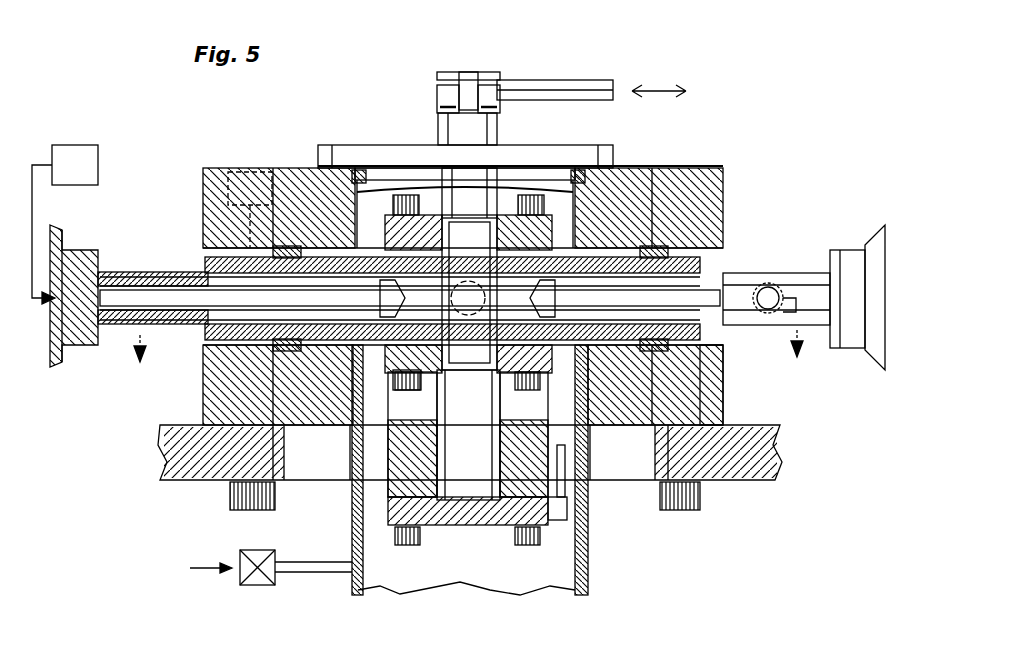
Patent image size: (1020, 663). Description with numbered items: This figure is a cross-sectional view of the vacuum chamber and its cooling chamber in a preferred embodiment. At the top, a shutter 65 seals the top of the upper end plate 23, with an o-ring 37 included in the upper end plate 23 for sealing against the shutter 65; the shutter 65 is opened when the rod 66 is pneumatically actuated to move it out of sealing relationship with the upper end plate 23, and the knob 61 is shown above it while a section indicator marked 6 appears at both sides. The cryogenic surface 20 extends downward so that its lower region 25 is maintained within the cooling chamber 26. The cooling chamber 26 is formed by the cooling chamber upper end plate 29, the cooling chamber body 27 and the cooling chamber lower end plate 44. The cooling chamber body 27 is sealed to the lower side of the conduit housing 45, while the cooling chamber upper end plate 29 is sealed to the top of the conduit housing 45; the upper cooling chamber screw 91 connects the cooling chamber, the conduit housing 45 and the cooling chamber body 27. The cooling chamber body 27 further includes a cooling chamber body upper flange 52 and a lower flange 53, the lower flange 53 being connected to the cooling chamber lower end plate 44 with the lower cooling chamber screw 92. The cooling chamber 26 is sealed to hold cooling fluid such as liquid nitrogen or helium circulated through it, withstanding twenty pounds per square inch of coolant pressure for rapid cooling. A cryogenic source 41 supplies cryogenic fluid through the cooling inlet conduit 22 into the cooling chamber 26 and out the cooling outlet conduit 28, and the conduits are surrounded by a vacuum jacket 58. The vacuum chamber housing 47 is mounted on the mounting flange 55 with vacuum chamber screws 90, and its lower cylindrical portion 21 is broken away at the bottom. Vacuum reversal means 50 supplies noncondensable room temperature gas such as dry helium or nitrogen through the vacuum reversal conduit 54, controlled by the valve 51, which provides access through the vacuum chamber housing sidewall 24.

The section line arrow 6 is at (469, 359).
The cryogenic surface 20 is at (462, 200).
The cylinder 21 is at (478, 564).
The cooling inlet conduit 22 is at (125, 345).
The upper end plate 23 is at (680, 160).
The vacuum chamber housing sidewall 24 is at (590, 584).
The lower region 25 is at (482, 352).
The cooling chamber 26 is at (478, 440).
The cooling chamber body 27 is at (515, 415).
The cooling outlet conduit 28 is at (740, 290).
The cooling chamber upper end plate 29 is at (322, 165).
The o-ring 37 is at (628, 158).
The cryogenic source 41 is at (65, 224).
The cooling chamber lower end plate 44 is at (505, 525).
The conduit housing 45 is at (727, 262).
The vacuum chamber housing 47 is at (725, 360).
The vacuum reversal means 50 is at (200, 570).
The valve 51 is at (262, 588).
The cooling chamber body upper flange 52 is at (693, 388).
The lower flange 53 is at (560, 470).
The vacuum reversal conduit 54 is at (320, 561).
The mounting flange 55 is at (770, 446).
The vacuum jacket 58 is at (148, 275).
The knob 61 is at (526, 78).
The shutter 65 is at (576, 152).
The rod 66 is at (585, 88).
The vacuum chamber screws 90 is at (232, 495).
The upper cooling chamber screw 91 is at (395, 380).
The lower cooling chamber screw 92 is at (405, 547).